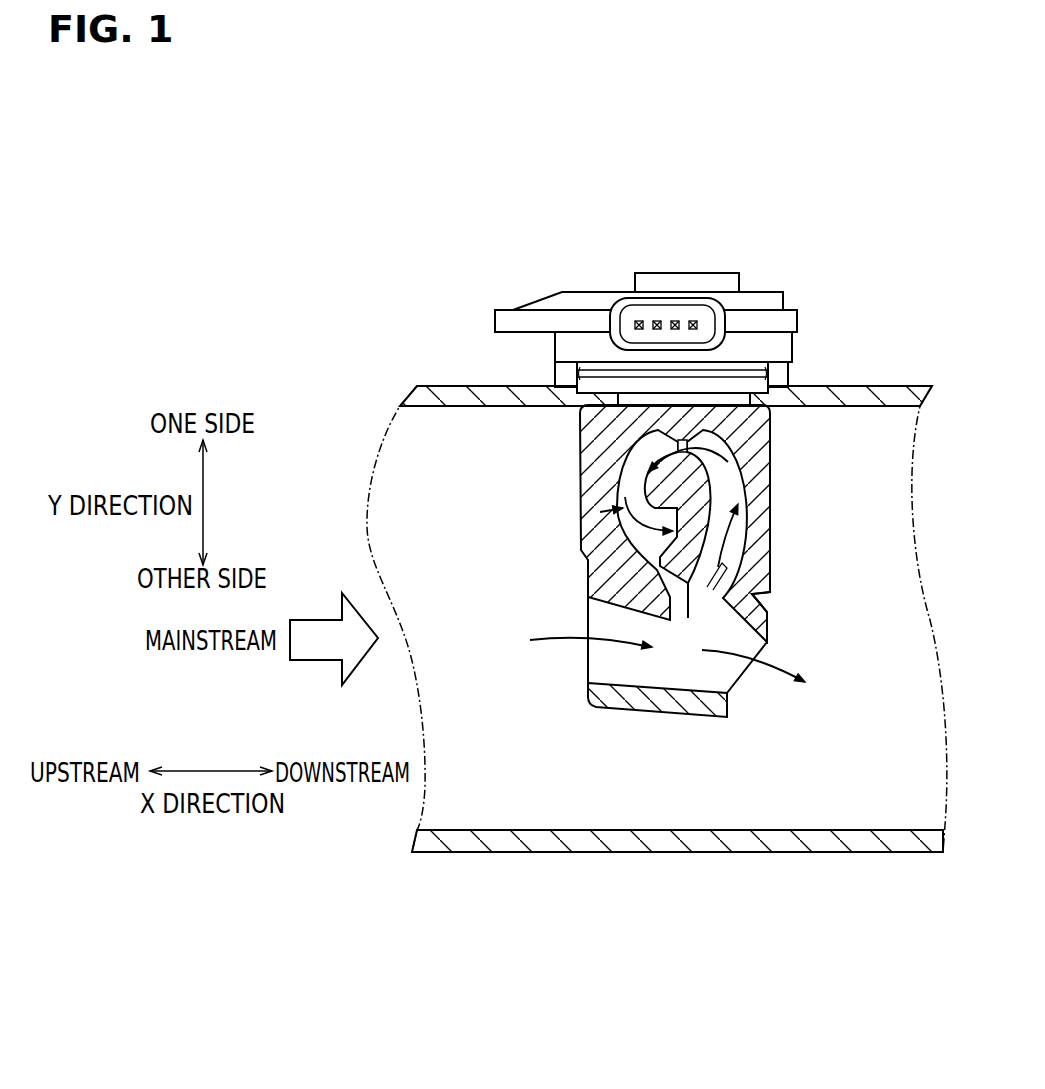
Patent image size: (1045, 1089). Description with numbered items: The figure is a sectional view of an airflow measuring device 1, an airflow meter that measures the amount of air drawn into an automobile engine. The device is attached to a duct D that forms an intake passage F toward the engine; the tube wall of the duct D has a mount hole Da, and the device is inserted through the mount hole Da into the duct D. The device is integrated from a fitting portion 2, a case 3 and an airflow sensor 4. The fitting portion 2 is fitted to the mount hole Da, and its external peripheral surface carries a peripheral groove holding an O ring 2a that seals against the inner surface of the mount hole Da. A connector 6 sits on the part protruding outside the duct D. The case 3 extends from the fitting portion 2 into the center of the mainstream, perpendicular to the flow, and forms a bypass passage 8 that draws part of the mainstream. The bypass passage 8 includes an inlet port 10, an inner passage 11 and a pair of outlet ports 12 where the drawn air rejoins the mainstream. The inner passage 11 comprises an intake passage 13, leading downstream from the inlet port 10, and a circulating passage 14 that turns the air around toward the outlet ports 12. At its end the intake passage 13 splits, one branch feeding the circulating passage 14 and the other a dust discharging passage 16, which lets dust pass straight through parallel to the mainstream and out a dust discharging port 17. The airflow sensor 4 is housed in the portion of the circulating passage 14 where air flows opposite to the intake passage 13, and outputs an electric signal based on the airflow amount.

The airflow measuring device 1 is at (862, 252).
The fitting portion 2 is at (587, 392).
The sealing member (O-ring) 2a is at (577, 380).
The case 3 is at (762, 536).
The airflow sensor 4 is at (692, 460).
The connector 6 is at (580, 297).
The bypass passage 8 is at (745, 560).
The inlet port 10 is at (585, 663).
The inner passage 11 is at (600, 512).
The outlet ports 12 is at (655, 552).
The intake passage 13 is at (603, 617).
The circulating passage 14 is at (727, 487).
The dust discharging passage 16 is at (767, 607).
The dust discharging port 17 is at (733, 687).
The duct D is at (897, 387).
The mount hole Da is at (757, 373).
The intake passage F is at (845, 795).